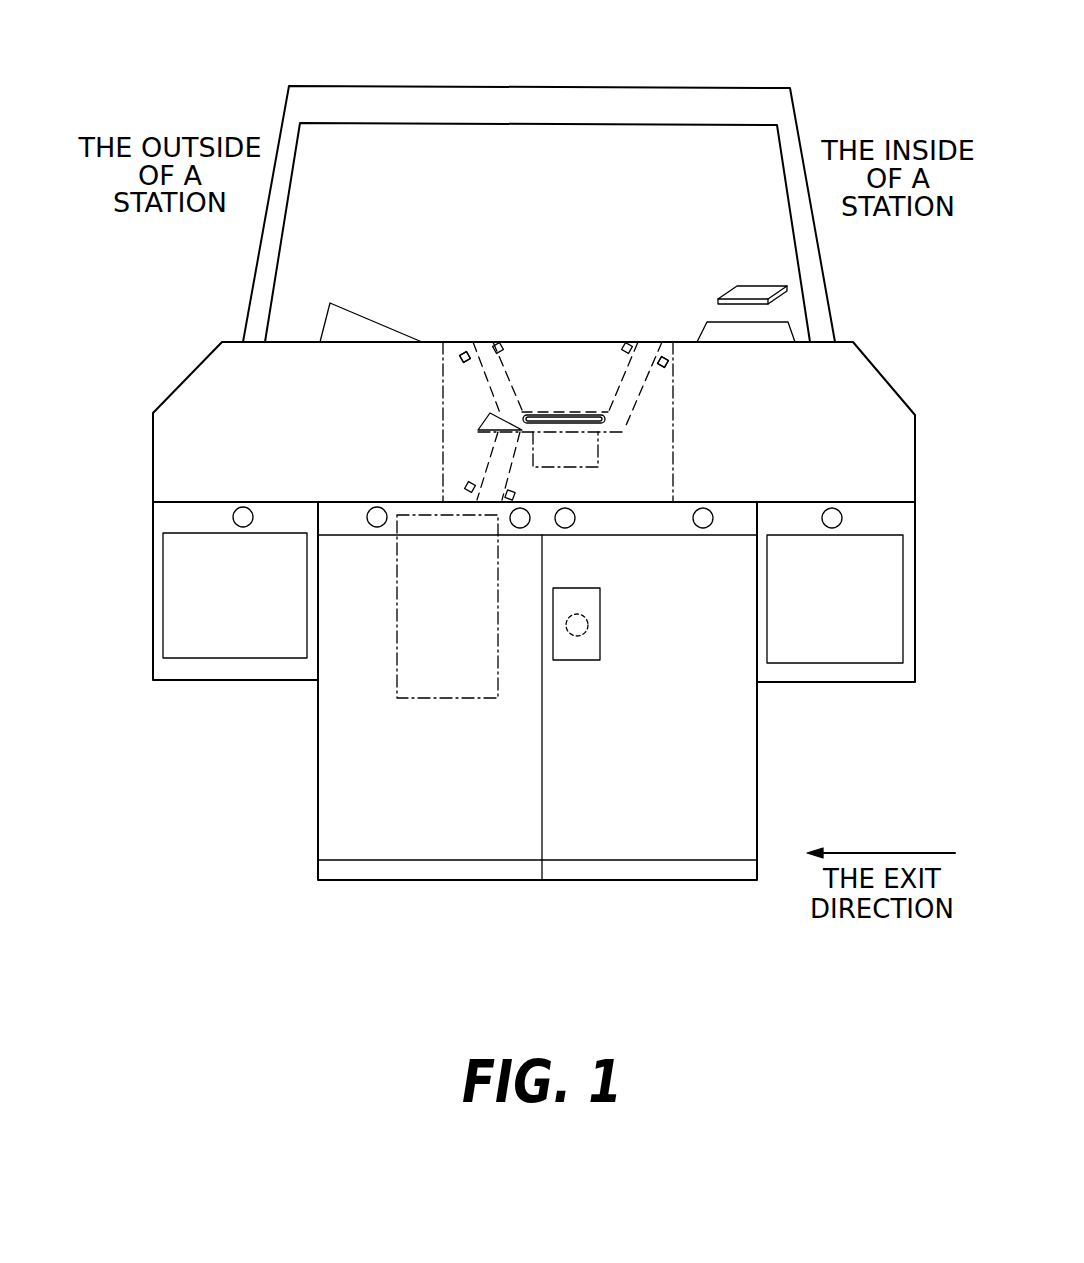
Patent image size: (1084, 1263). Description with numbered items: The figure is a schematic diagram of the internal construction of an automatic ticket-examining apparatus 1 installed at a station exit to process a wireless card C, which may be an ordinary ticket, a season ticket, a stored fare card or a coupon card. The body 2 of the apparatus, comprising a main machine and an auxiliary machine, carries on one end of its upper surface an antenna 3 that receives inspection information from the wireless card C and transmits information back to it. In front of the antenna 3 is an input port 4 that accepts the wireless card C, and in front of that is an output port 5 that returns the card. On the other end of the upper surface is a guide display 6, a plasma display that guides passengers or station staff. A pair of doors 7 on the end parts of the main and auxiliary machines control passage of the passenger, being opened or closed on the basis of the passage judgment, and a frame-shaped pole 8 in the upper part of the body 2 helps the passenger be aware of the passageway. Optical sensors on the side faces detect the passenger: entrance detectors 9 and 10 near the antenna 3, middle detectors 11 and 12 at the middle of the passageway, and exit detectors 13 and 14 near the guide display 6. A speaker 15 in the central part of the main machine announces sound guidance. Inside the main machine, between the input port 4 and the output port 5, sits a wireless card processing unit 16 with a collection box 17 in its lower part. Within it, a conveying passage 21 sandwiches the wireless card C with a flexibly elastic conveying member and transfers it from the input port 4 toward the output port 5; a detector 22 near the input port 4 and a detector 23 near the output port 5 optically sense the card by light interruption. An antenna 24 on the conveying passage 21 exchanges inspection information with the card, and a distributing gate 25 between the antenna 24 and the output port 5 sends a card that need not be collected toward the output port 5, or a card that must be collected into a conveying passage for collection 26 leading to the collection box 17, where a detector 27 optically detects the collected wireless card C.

The automatic ticket-examining apparatus 1 is at (876, 344).
The body 2 is at (870, 402).
The antenna 3 is at (780, 335).
The input port 4 is at (652, 343).
The output port 5 is at (477, 347).
The guide display 6 is at (365, 327).
The doors 7 is at (217, 662).
The frame-shaped pole 8 is at (645, 108).
The entrance detector 9 is at (832, 508).
The entrance detector 10 is at (703, 508).
The middle detector 11 is at (572, 528).
The middle detector 12 is at (523, 528).
The exit detector 13 is at (377, 507).
The exit detector 14 is at (243, 507).
The speaker 15 is at (600, 632).
The wireless card processing unit 16 is at (585, 352).
The collection box 17 is at (417, 698).
The conveying passage 21 is at (633, 380).
The detector 22 is at (668, 366).
The detector 23 is at (460, 357).
The antenna 24 is at (600, 445).
The distributing gate 25 is at (478, 427).
The conveying passage for collection 26 is at (497, 453).
The detector 27 is at (514, 495).
The wireless card C is at (760, 290).